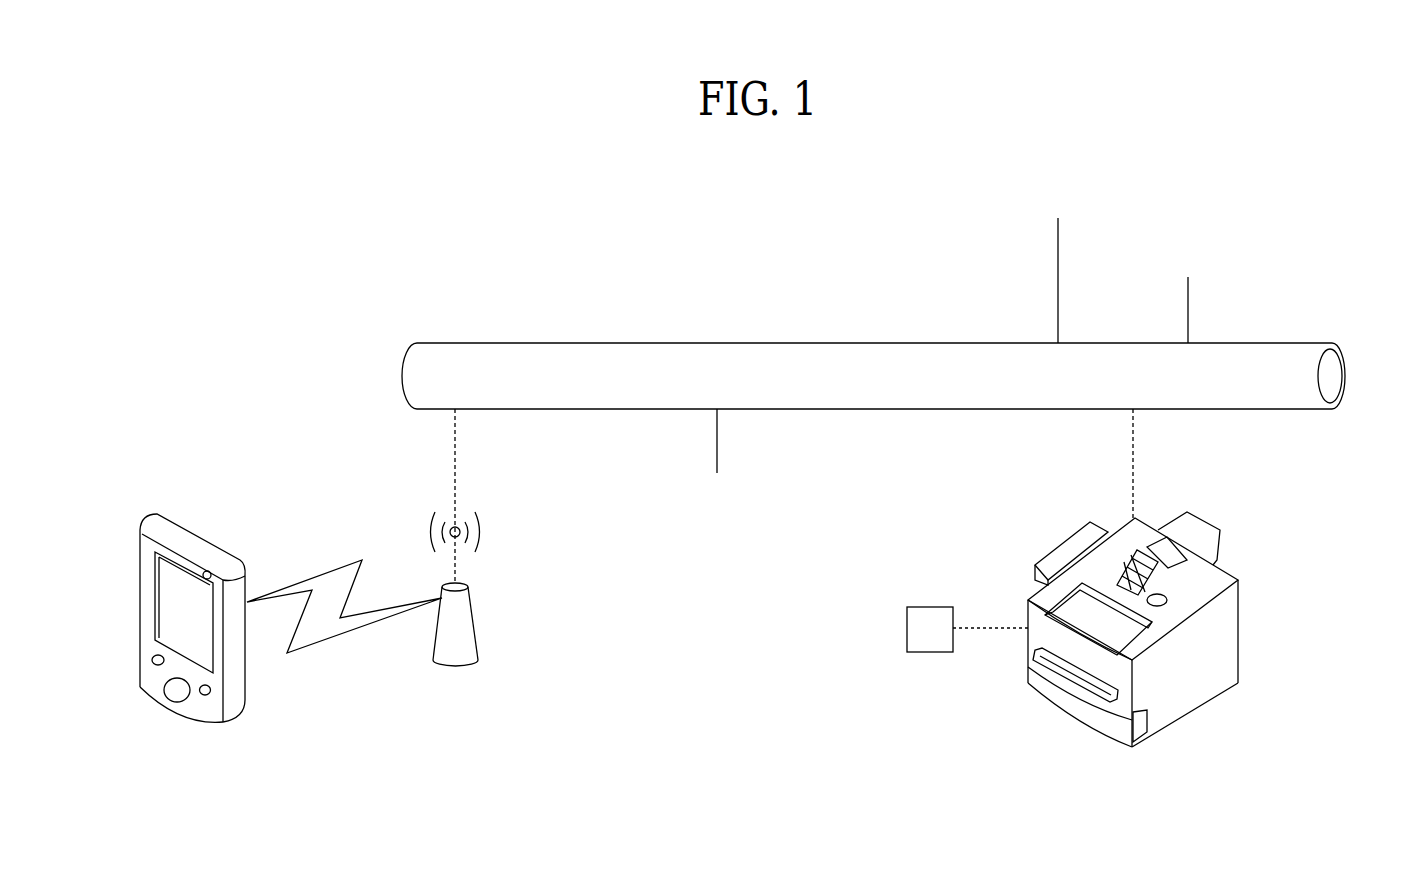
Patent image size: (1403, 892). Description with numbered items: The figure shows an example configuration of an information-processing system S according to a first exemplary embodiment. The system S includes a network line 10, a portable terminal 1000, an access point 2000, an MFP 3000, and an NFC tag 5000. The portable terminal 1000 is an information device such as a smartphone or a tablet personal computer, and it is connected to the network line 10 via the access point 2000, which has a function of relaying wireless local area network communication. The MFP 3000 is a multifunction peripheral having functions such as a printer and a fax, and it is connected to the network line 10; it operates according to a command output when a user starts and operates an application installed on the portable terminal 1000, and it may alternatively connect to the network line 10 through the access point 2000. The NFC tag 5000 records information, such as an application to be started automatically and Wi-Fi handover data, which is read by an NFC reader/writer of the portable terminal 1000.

The information-processing system S is at (894, 253).
The network line 10 is at (1334, 376).
The portable terminal 1000 is at (230, 717).
The access point 2000 is at (472, 618).
The MFP 3000 is at (1232, 627).
The NFC tag 5000 is at (905, 633).